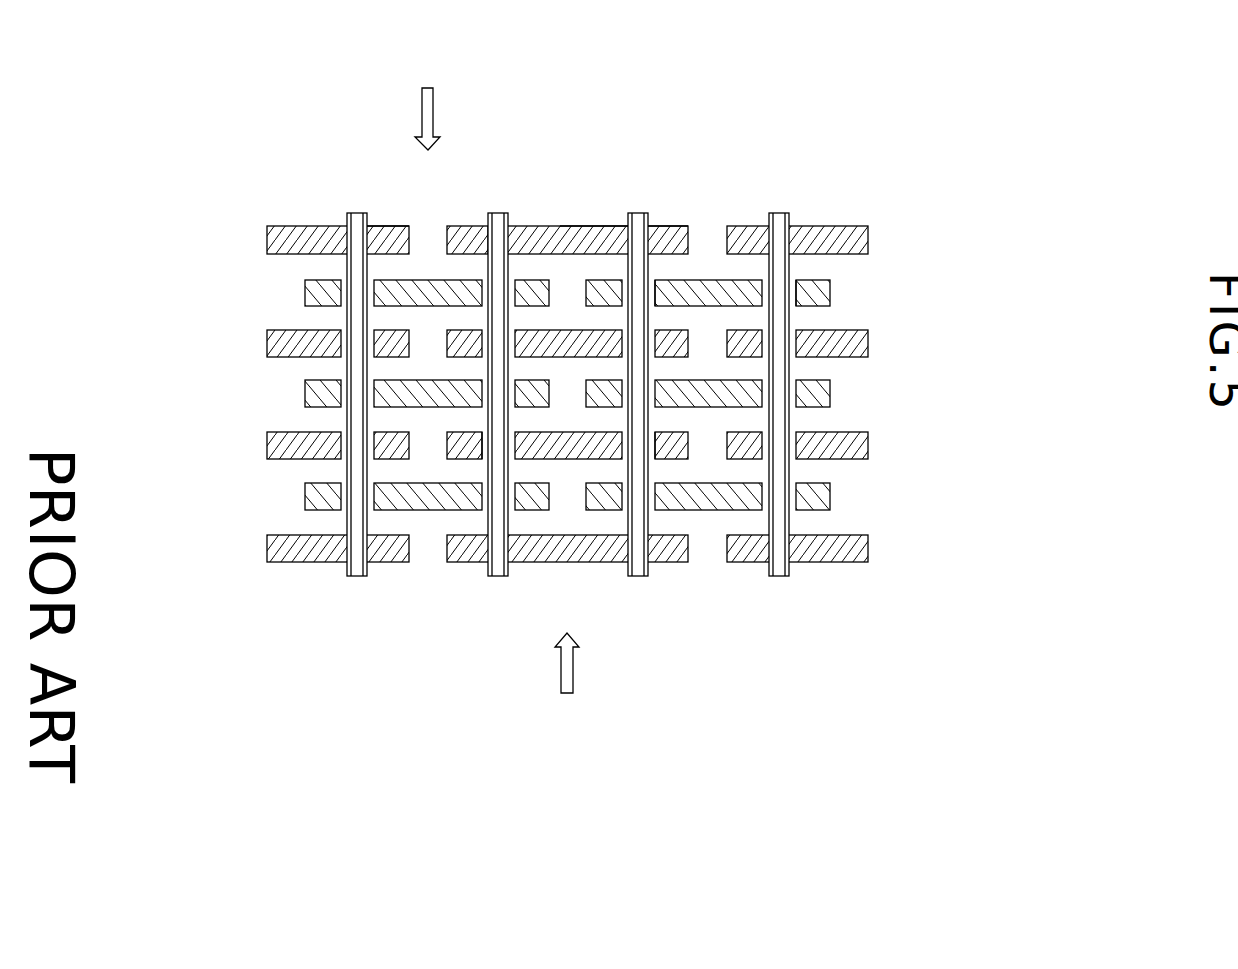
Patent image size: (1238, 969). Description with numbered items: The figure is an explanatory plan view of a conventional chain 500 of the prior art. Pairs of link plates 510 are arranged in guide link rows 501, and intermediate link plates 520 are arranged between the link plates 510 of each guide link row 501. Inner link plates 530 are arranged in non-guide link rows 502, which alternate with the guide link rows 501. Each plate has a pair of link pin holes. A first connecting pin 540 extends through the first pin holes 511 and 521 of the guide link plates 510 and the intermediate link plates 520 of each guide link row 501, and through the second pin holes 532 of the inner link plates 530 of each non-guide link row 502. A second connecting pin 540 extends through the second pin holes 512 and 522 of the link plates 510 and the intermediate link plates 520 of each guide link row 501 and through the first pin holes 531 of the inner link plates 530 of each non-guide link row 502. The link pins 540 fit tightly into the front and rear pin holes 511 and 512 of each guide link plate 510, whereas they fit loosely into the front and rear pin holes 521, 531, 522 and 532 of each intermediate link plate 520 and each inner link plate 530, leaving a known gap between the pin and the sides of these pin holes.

The conventional chain 500 is at (766, 81).
The guide link row 501 is at (567, 680).
The non-guide link row 502 is at (428, 103).
The link plate 510 is at (288, 240).
The first pin hole 511 is at (487, 240).
The second pin hole 512 is at (373, 240).
The intermediate link plate 520 is at (568, 335).
The first pin hole 521 is at (481, 450).
The second pin hole 522 is at (654, 457).
The inner link plate 530 is at (303, 293).
The first pin hole 531 is at (657, 290).
The second pin hole 532 is at (796, 287).
The connecting pin 540 is at (497, 220).